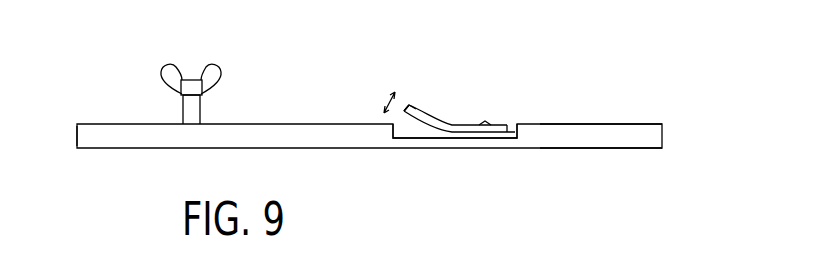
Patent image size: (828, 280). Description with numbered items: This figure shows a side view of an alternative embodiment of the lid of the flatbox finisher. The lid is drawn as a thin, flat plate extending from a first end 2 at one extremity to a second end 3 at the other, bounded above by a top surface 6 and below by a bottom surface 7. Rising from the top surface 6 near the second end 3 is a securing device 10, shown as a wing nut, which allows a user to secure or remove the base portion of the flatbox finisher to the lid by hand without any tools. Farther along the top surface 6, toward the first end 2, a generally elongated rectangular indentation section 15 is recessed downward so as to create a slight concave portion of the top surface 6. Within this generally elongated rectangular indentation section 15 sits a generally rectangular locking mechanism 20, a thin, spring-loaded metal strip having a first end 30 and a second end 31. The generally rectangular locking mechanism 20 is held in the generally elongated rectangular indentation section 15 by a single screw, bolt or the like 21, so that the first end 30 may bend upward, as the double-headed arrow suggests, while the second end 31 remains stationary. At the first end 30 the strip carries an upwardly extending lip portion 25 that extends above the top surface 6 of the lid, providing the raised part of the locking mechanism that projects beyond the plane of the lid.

The first end 2 is at (663, 137).
The second end 3 is at (76, 133).
The top surface 6 is at (612, 124).
The bottom surface 7 is at (613, 149).
The securing device 10 is at (173, 70).
The generally elongated rectangular indentation section 15 is at (513, 128).
The generally rectangular locking mechanism 20 is at (447, 125).
The screw, bolt or the like 21 is at (487, 122).
The upwardly extending lip portion 25 is at (413, 105).
The first end 30 is at (405, 110).
The second end 31 is at (507, 125).